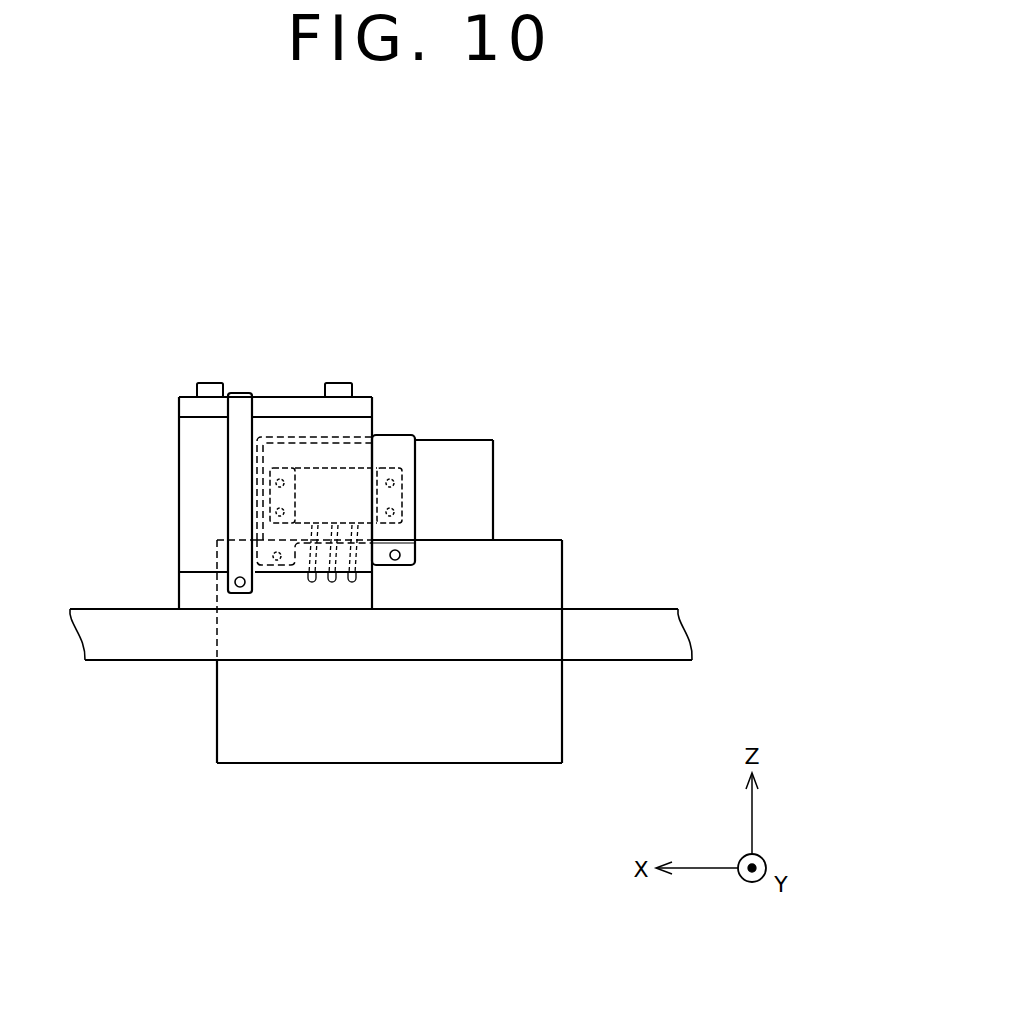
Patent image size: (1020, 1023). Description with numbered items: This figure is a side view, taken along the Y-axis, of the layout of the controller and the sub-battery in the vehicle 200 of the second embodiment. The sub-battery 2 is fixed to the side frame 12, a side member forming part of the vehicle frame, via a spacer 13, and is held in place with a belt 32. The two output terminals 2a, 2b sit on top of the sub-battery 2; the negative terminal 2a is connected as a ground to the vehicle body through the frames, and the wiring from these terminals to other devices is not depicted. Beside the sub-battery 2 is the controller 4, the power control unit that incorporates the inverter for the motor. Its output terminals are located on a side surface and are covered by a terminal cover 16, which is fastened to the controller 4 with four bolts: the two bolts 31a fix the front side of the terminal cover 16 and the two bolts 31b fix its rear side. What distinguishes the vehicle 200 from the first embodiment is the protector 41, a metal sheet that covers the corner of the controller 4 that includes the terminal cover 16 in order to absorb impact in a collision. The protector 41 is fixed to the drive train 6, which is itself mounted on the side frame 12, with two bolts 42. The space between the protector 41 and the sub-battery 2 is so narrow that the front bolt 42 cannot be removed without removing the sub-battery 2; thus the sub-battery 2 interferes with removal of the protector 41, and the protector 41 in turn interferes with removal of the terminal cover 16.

The vehicle 200 is at (653, 267).
The sub-battery 2 is at (188, 448).
The negative terminal 2a is at (210, 388).
The output terminal 2b is at (338, 388).
The belt 32 is at (242, 398).
The terminal cover 16 is at (327, 467).
The protector 41 is at (397, 435).
The controller 4 is at (482, 455).
The bolts 31a is at (275, 483).
The bolts 31b is at (395, 482).
The bolts 42 is at (270, 556).
The spacer 13 is at (188, 600).
The side frame 12 is at (140, 640).
The drive train 6 is at (273, 743).